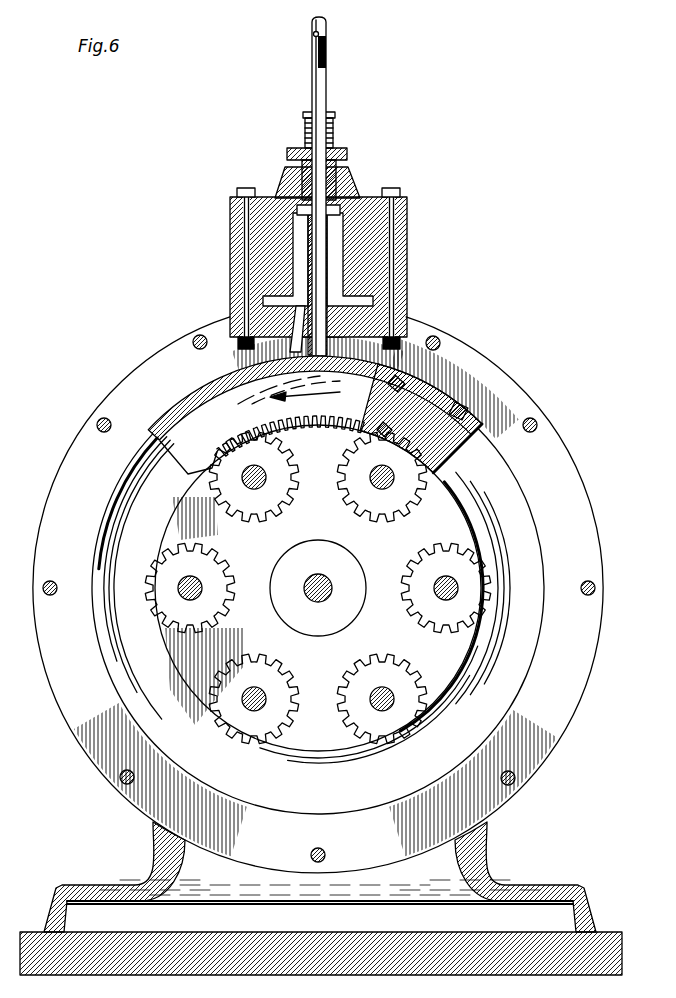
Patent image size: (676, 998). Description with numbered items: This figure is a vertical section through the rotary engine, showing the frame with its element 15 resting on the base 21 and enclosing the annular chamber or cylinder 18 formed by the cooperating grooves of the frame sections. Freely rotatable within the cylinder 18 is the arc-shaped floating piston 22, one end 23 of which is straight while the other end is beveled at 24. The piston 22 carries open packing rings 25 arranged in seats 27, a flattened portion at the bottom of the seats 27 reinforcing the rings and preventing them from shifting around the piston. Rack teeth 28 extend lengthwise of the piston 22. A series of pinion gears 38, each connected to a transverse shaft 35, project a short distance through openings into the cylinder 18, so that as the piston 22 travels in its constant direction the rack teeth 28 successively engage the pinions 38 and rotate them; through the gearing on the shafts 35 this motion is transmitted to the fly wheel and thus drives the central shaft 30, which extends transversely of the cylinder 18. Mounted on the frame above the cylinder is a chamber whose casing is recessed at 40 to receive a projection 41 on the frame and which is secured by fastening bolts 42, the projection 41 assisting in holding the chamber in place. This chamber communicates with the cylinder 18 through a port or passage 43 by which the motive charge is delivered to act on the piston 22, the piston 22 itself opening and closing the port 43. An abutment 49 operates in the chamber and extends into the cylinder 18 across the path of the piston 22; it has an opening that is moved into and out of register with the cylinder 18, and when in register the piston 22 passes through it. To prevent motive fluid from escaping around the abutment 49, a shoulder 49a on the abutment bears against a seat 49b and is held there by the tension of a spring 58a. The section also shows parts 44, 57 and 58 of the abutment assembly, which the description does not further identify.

The housing 15 is at (568, 514).
The annular chamber or cylinder 18 is at (518, 654).
The base 21 is at (527, 889).
The floating piston 22 is at (425, 407).
The end of the piston 23 is at (446, 463).
The beveled end 24 is at (162, 432).
The packing rings 25 is at (385, 420).
The seats 27 is at (400, 392).
The rack teeth 28 is at (250, 412).
The shaft 30 is at (330, 592).
The shaft 35 is at (382, 489).
The pinion gear 38 is at (441, 548).
The recess 40 is at (372, 298).
The projection 41 is at (272, 300).
The fastening bolts 42 is at (394, 222).
The port or passage 43 is at (297, 335).
The valve bonnet 44 is at (357, 196).
The abutment 49 is at (315, 258).
The shoulder 49a is at (286, 195).
The seat 49b is at (352, 287).
The valve rod 57 is at (313, 76).
The rod head 58 is at (315, 36).
The spring 58a is at (313, 60).